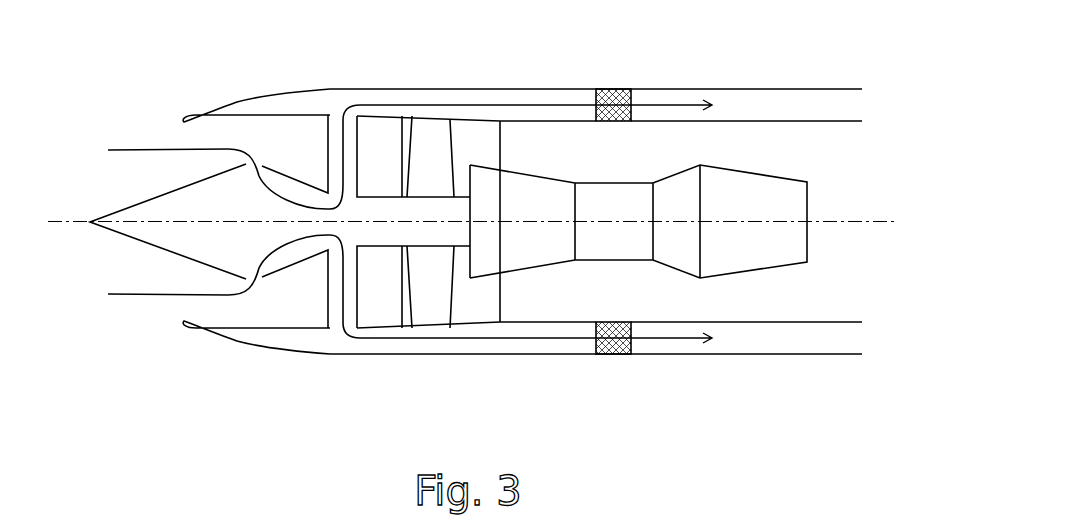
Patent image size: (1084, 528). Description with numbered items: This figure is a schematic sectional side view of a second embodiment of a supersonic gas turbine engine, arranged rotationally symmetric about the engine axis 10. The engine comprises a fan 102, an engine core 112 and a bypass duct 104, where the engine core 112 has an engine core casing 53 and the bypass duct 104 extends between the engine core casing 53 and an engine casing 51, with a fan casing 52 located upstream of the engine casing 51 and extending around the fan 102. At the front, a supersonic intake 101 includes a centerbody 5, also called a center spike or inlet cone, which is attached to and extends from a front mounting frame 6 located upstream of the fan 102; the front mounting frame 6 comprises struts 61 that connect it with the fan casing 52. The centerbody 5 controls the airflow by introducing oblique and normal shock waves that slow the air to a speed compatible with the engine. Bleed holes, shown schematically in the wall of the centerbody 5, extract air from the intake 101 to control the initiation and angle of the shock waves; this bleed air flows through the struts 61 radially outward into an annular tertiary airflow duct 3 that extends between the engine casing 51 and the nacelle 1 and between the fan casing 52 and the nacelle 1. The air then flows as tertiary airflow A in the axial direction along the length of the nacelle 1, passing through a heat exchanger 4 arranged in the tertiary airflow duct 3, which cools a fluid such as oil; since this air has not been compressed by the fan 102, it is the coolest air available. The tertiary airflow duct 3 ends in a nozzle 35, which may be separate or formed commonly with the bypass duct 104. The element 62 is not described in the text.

The nacelle 1 is at (412, 88).
The tertiary airflow duct 3 is at (505, 100).
The heat exchanger 4 is at (617, 88).
The centerbody 5 is at (168, 253).
The front mounting frame 6 is at (359, 146).
The engine axis 10 is at (857, 220).
The nozzle 35 is at (850, 104).
The bleed holes 51 is at (557, 120).
The fan casing 52 is at (467, 328).
The engine core casing 53 is at (603, 181).
The struts 61 is at (342, 112).
The lower wall bend 62 is at (347, 307).
The supersonic intake 101 is at (257, 118).
The fan 102 is at (453, 142).
The bypass duct 104 is at (594, 167).
The engine core 112 is at (602, 248).
The tertiary airflow A is at (670, 104).